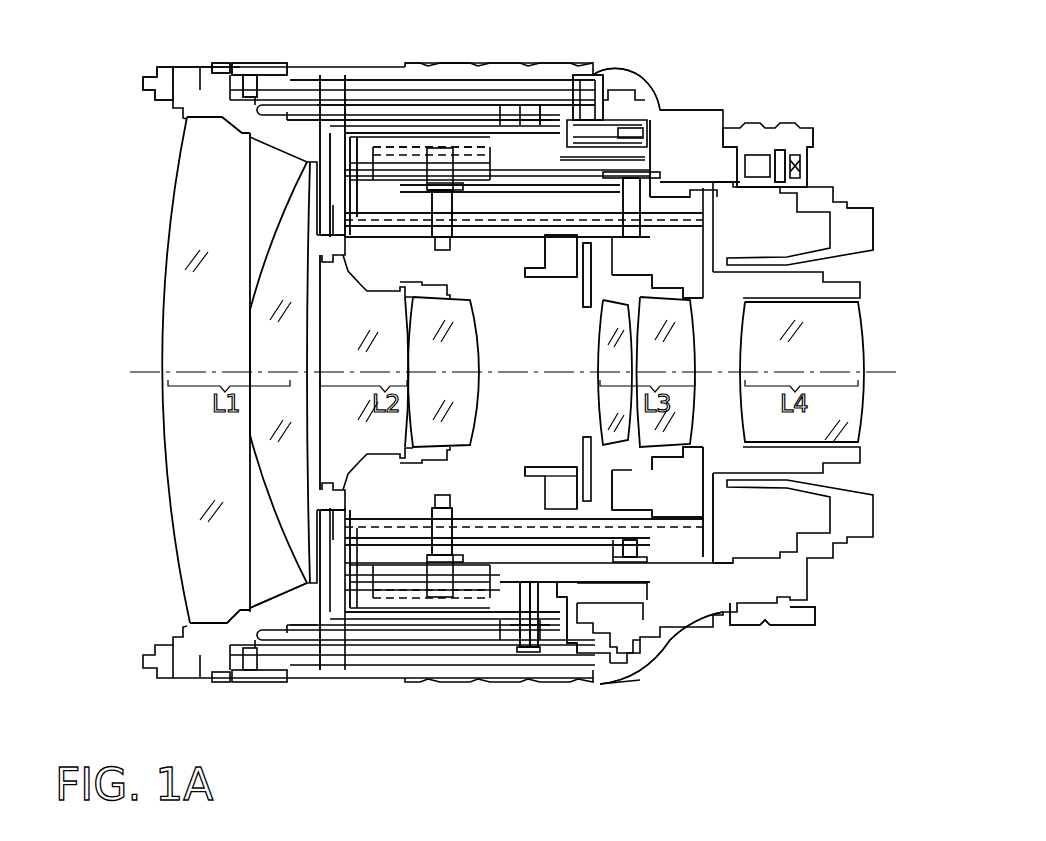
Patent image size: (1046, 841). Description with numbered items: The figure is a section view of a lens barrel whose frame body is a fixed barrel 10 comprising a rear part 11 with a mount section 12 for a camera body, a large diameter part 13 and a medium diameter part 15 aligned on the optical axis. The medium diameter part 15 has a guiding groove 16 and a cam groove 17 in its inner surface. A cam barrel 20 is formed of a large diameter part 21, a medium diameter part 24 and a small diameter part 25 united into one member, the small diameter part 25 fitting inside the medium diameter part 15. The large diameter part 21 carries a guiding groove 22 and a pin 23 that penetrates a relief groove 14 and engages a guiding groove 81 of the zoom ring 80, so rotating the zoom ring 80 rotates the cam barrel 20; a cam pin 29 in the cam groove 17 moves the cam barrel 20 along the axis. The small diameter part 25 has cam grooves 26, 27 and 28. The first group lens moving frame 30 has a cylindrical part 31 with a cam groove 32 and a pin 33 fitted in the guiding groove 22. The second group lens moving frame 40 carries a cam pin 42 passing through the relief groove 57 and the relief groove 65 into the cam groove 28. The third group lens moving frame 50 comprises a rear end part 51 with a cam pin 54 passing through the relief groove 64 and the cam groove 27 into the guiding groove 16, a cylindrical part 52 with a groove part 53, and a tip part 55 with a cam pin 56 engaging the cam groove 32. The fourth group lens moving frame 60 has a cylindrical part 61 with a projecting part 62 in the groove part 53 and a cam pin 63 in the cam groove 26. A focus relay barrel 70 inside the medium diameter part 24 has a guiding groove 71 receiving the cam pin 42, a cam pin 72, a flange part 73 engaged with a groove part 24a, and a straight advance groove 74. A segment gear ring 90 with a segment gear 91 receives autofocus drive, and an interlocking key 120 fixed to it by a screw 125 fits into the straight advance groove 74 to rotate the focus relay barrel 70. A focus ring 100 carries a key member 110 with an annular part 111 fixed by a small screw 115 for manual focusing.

The fixed barrel 10 is at (690, 137).
The rear part 11 is at (853, 223).
The mount section 12 is at (820, 197).
The large diameter part 13 is at (382, 72).
The relief groove 14 is at (610, 85).
The medium diameter part 15 is at (552, 222).
The guiding groove 16 is at (545, 180).
The cam groove 17 is at (572, 205).
The cam barrel 20 is at (378, 190).
The large diameter part 21 is at (472, 104).
The guiding groove 22 is at (487, 112).
The pin 23 is at (578, 95).
The medium diameter part 24 is at (500, 145).
The groove part 24a is at (590, 682).
The small diameter part 25 is at (522, 232).
The cam groove 26 is at (688, 560).
The cam groove 27 is at (665, 197).
The cam groove 28 is at (507, 200).
The cam pin 29 is at (645, 218).
The first group lens moving frame 30 is at (170, 80).
The cylindrical part 31 is at (350, 118).
The cam groove 32 is at (343, 123).
The pin 33 is at (538, 105).
The second group lens moving frame 40 is at (385, 570).
The cam pin 42 is at (440, 240).
The third group lens moving frame 50 is at (580, 470).
The rear end part 51 is at (596, 440).
The cylindrical part 52 is at (548, 445).
The groove part 53 is at (540, 470).
The cam pin 54 is at (660, 228).
The tip part 55 is at (350, 610).
The cam pin 56 is at (310, 665).
The relief groove 57 is at (480, 195).
The fourth group lens moving frame 60 is at (712, 480).
The cylindrical part 61 is at (687, 508).
The projecting part 62 is at (668, 530).
The cam pin 63 is at (632, 542).
The relief groove 64 is at (662, 222).
The relief groove 65 is at (500, 190).
The focus relay barrel 70 is at (522, 650).
The guiding groove 71 is at (495, 600).
The cam pin 72 is at (533, 650).
The flange part 73 is at (565, 655).
The straight advance groove 74 is at (400, 147).
The zoom ring 80 is at (425, 66).
The guiding groove 81 is at (450, 72).
The segment gear ring 90 is at (655, 640).
The segment gear 91 is at (640, 678).
The focus ring 100 is at (220, 66).
The key member 110 is at (282, 76).
The annular part 111 is at (222, 66).
The small screw 115 is at (250, 74).
The interlocking key 120 is at (655, 153).
The screw 125 is at (652, 147).